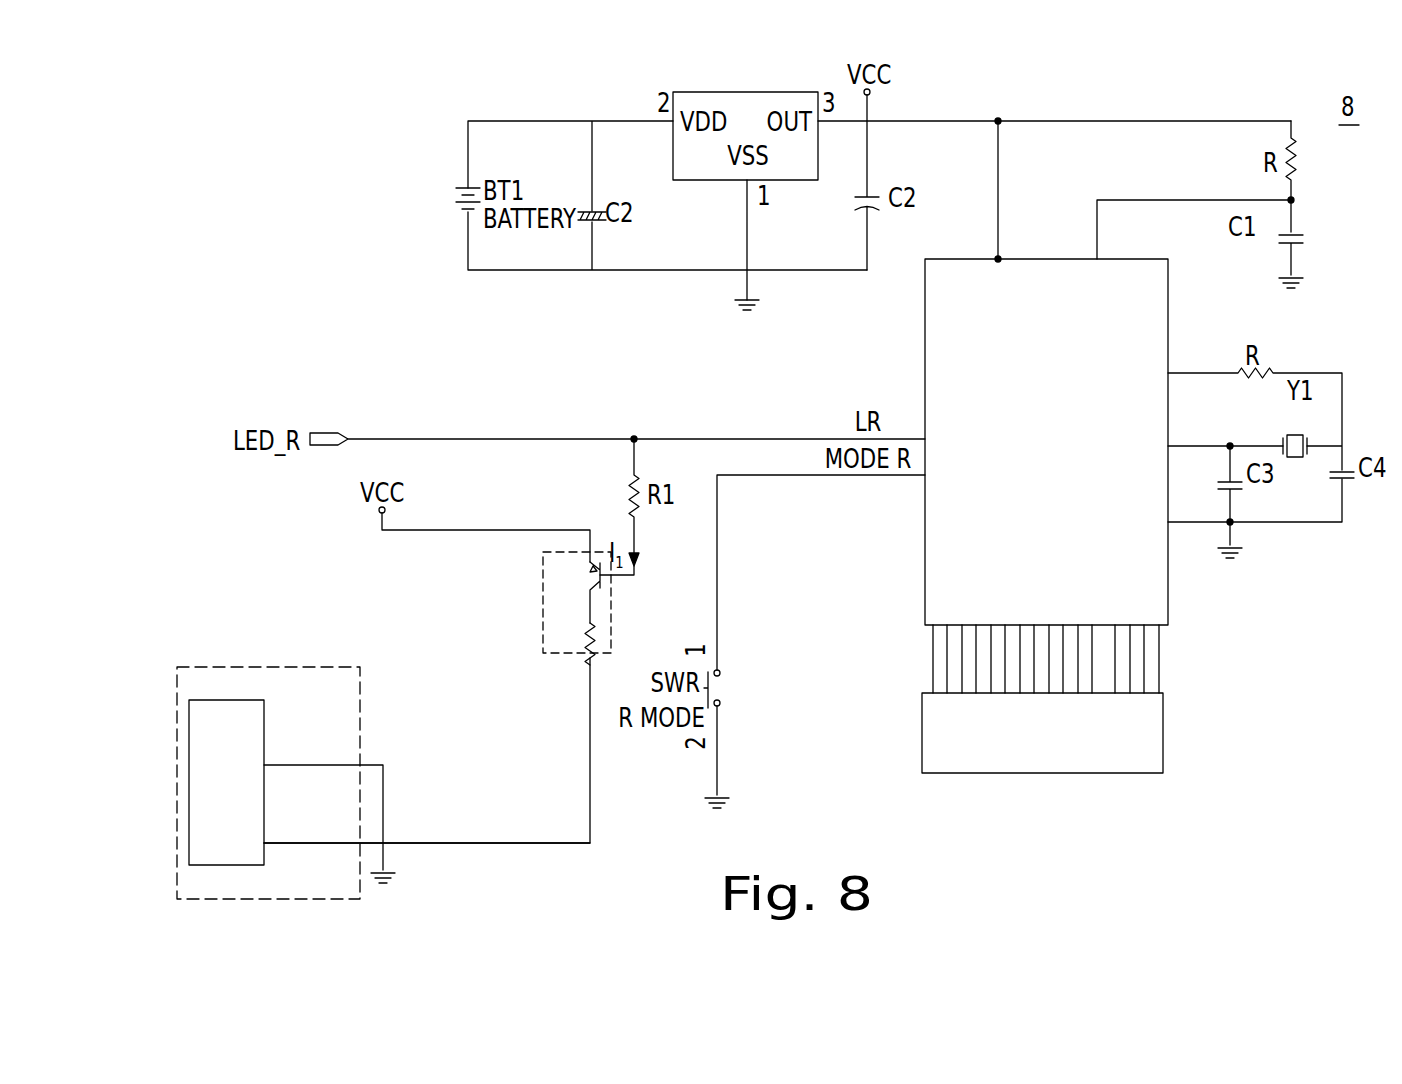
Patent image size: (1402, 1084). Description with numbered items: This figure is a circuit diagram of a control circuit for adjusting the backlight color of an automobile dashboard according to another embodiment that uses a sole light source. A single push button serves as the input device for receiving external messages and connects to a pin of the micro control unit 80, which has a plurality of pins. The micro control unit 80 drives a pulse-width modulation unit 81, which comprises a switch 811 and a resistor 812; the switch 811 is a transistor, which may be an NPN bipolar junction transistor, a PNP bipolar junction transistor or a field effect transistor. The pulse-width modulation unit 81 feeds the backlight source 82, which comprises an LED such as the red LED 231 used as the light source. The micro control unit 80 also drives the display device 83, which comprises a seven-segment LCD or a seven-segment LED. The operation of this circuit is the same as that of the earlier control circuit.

The micro control unit 80 is at (1168, 592).
The pulse-width modulation (PWM) unit 81 is at (567, 632).
The switch 811 is at (573, 591).
The resistor 812 is at (541, 680).
The backlight source 82 is at (288, 667).
The display device 83 is at (1163, 734).
The red LED 231 is at (427, 826).